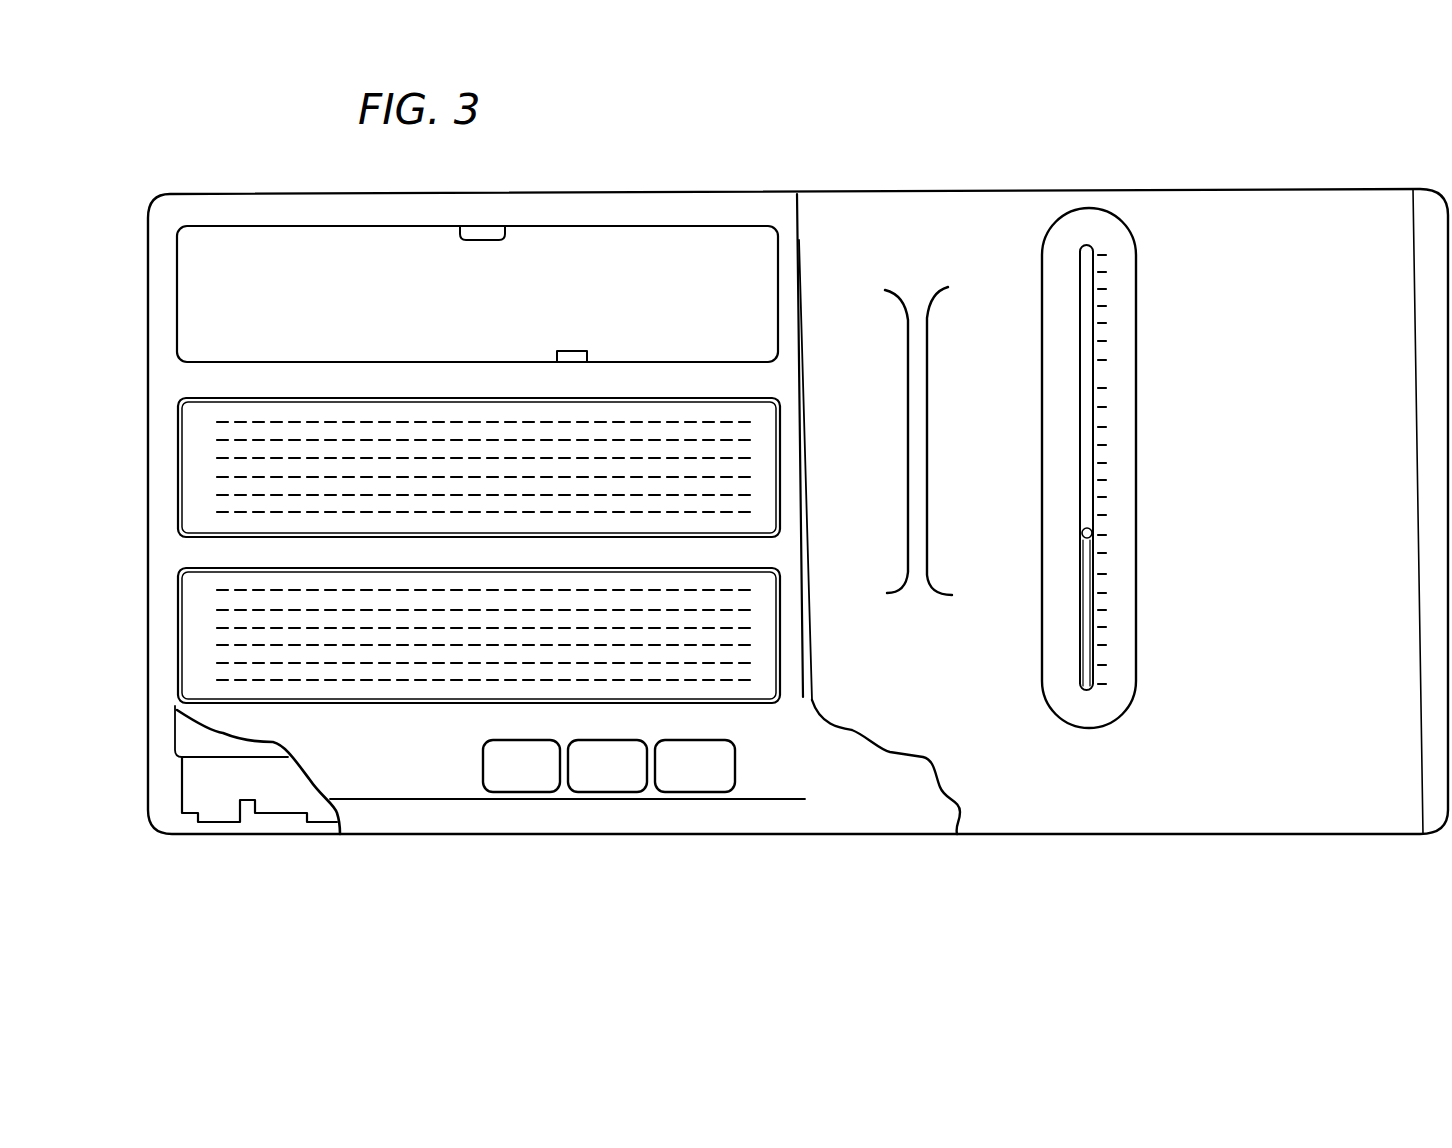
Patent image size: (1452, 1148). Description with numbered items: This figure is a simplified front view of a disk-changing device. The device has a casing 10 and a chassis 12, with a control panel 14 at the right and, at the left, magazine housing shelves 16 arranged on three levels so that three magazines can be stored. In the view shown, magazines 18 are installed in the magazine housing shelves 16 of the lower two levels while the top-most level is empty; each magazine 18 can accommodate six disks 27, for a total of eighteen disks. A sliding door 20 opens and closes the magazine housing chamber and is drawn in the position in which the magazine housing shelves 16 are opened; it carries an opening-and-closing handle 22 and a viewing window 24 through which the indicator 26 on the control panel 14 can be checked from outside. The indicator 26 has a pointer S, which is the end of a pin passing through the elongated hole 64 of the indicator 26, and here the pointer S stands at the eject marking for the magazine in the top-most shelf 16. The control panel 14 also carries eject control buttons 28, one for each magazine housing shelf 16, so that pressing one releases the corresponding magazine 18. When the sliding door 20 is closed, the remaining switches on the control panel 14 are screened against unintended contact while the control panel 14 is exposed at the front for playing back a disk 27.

The casing 10 is at (148, 318).
The chassis 12 is at (172, 726).
The control panel 14 is at (892, 786).
The magazine housing shelves 16 is at (233, 362).
The magazines 18 is at (183, 468).
The sliding door 20 is at (828, 221).
The opening-and-closing handle 22 is at (928, 328).
The viewing window 24 is at (1122, 222).
The indicator 26 is at (1097, 240).
The disks 27 is at (245, 510).
The eject control buttons 28 is at (668, 792).
The elongated hole 64 is at (1083, 587).
The pointer S is at (1082, 530).